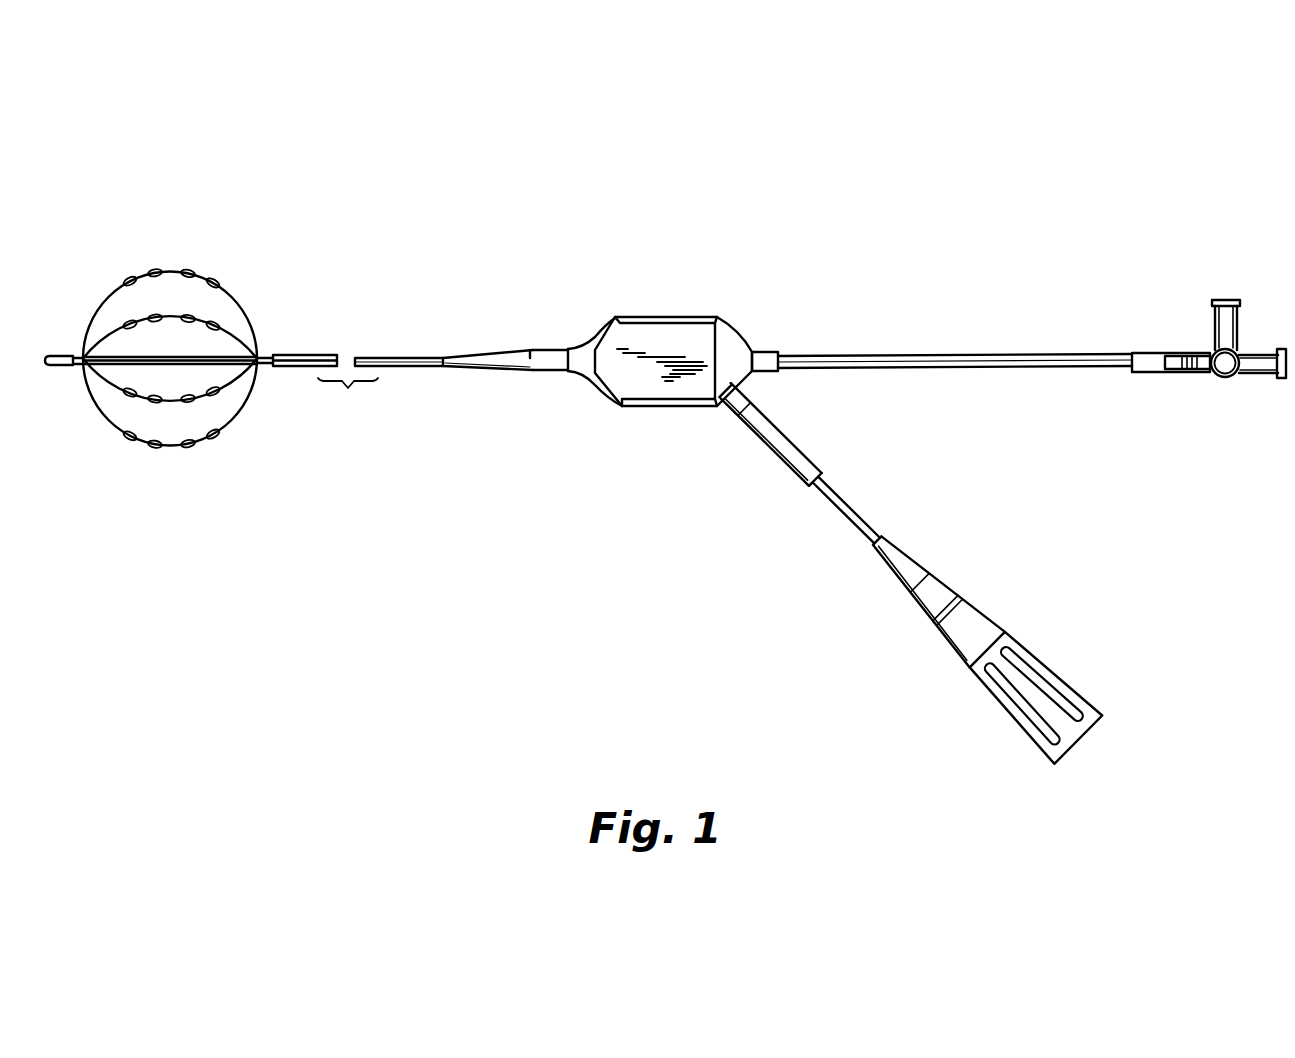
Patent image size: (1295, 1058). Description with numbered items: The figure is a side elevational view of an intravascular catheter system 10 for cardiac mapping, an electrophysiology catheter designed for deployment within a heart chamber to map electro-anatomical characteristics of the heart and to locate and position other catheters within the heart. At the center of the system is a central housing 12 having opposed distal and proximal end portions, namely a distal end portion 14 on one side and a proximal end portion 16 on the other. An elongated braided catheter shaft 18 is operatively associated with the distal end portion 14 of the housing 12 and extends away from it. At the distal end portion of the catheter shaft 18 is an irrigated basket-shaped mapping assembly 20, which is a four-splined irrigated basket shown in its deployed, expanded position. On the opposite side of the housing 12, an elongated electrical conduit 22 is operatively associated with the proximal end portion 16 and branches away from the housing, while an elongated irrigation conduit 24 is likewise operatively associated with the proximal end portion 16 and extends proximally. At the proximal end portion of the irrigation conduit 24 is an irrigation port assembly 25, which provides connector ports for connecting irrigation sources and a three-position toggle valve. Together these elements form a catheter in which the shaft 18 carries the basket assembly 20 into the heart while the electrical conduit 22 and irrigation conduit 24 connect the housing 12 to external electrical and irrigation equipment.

The intravascular catheter system 10 is at (424, 172).
The central housing 12 is at (665, 317).
The distal end portion 14 is at (597, 332).
The proximal end portion 16 is at (746, 333).
The braided catheter shaft 18 is at (398, 357).
The irrigated basket-shaped mapping assembly 20 is at (129, 258).
The electrical conduit 22 is at (833, 503).
The irrigation conduit 24 is at (950, 362).
The irrigation port assembly 25 is at (1255, 364).